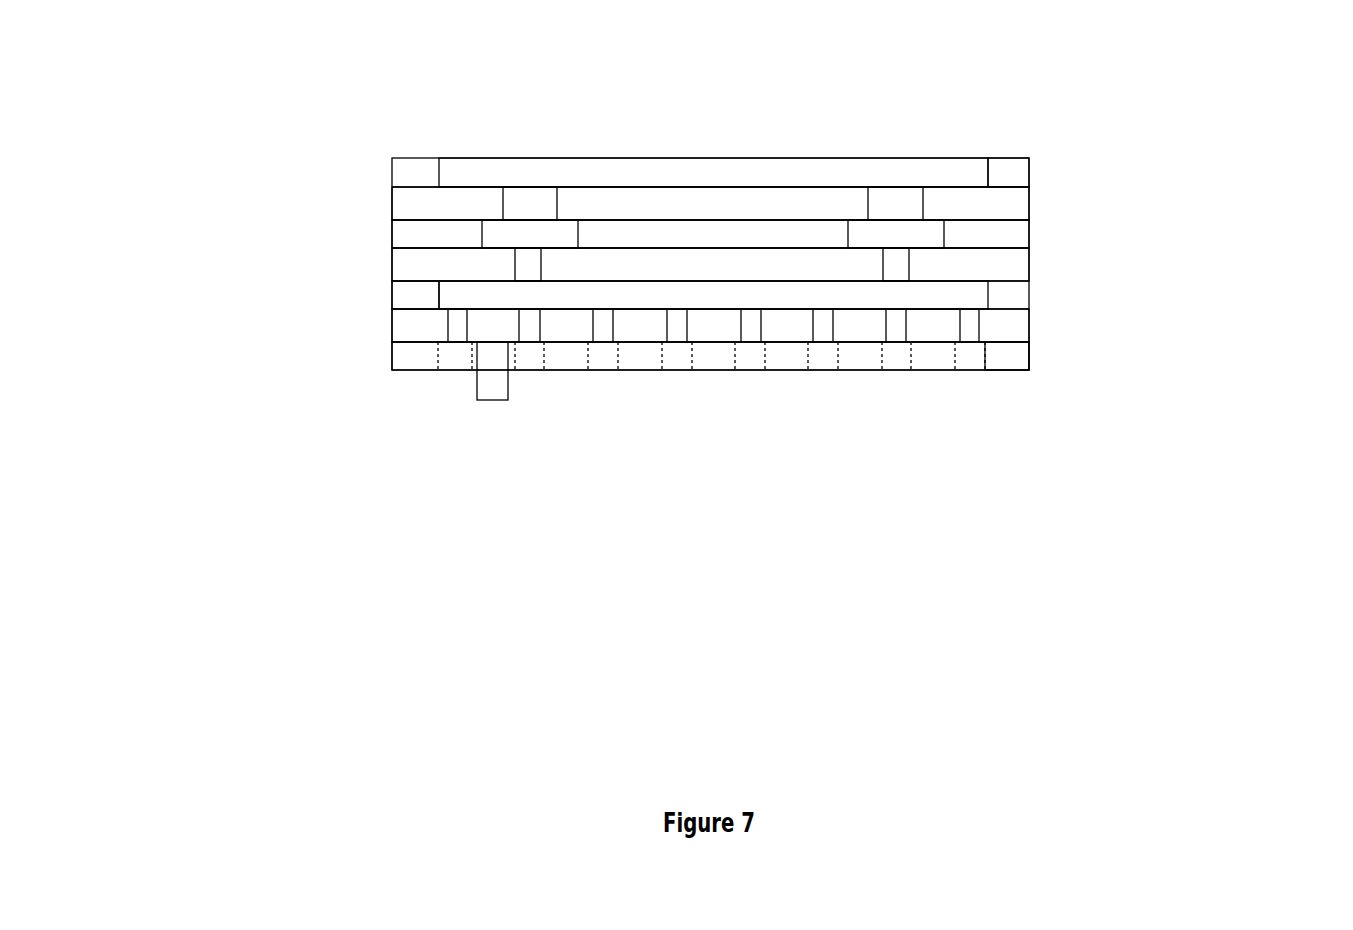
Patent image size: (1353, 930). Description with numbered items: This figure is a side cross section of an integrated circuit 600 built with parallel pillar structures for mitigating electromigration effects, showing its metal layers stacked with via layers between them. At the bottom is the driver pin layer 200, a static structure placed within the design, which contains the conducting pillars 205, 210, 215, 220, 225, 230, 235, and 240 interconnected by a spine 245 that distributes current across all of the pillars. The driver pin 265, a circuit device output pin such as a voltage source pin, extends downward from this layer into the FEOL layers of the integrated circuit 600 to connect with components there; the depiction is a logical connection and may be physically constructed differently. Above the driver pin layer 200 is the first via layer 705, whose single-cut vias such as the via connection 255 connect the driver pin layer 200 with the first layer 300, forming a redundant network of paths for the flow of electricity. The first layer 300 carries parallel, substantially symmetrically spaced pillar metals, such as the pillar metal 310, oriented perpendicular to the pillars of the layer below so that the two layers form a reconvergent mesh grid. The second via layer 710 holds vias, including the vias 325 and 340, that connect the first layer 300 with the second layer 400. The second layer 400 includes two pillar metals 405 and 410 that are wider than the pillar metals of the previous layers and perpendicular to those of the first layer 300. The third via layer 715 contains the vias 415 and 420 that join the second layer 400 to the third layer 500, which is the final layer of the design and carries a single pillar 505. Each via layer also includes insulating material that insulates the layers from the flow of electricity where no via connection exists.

The integrated circuit 600 is at (885, 78).
The third layer 500 is at (392, 173).
The pillar 505 is at (988, 172).
The third via layer 715 is at (1029, 206).
The via 415 is at (502, 203).
The via 420 is at (868, 203).
The second layer 400 is at (1029, 237).
The pillar metal 405 is at (482, 232).
The pillar metal 410 is at (848, 235).
The second via layer 710 is at (1029, 266).
The via 340 is at (543, 264).
The via 325 is at (883, 266).
The first layer 300 is at (392, 295).
The pillar metal 310 is at (439, 295).
The first via layer 705 is at (1029, 327).
The via connection 255 is at (448, 323).
The driver pin layer 200 is at (1029, 357).
The pillar 205 is at (457, 371).
The pillar 210 is at (529, 371).
The pillar 215 is at (603, 371).
The pillar 220 is at (676, 371).
The pillar 225 is at (750, 371).
The pillar 230 is at (823, 371).
The pillar 235 is at (897, 371).
The pillar 240 is at (970, 371).
The spine 245 is at (990, 358).
The driver pin 265 is at (492, 403).